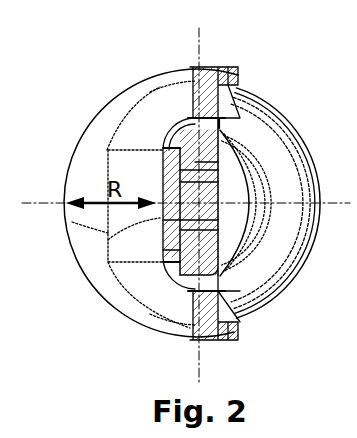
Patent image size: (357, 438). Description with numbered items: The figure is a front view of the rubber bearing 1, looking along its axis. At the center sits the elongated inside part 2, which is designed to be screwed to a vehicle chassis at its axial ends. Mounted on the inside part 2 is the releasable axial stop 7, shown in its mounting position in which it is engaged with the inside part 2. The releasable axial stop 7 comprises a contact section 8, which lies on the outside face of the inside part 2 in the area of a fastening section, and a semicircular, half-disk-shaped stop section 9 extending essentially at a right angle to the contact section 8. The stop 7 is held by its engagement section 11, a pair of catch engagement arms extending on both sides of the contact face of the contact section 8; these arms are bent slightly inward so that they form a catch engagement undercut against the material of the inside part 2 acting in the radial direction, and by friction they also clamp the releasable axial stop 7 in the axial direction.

The rubber bearing 1 is at (60, 60).
The inside part 2 is at (293, 133).
The releasable axial stop 7 is at (143, 93).
The contact section 8 is at (100, 250).
The stop section 9 is at (90, 282).
The engagement section 11 is at (232, 84).